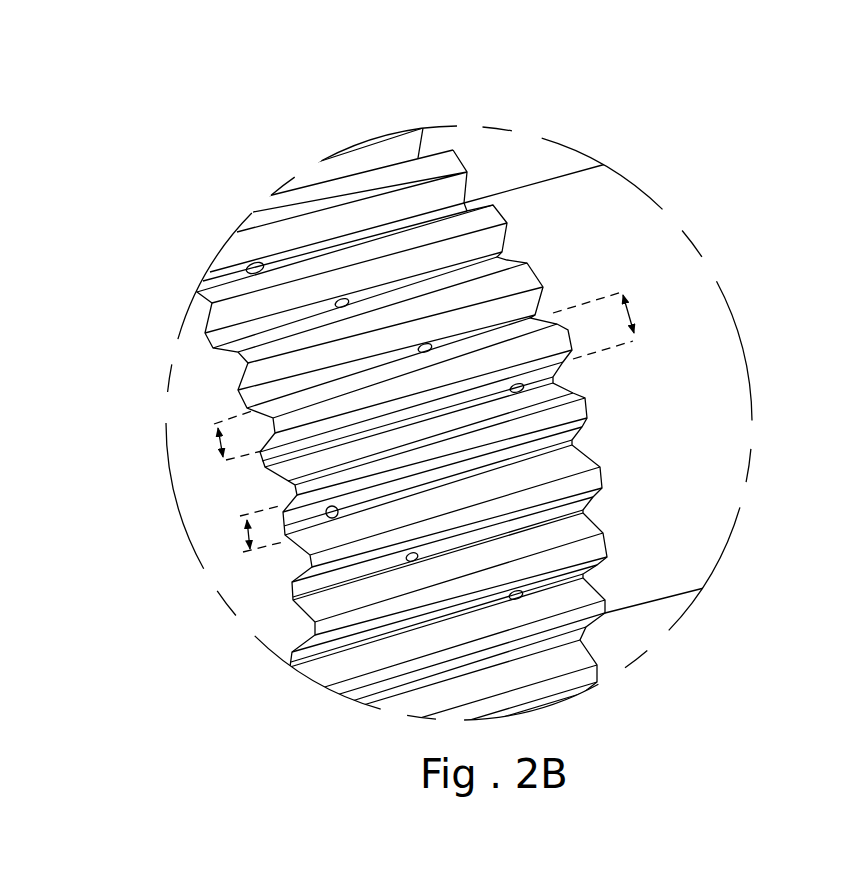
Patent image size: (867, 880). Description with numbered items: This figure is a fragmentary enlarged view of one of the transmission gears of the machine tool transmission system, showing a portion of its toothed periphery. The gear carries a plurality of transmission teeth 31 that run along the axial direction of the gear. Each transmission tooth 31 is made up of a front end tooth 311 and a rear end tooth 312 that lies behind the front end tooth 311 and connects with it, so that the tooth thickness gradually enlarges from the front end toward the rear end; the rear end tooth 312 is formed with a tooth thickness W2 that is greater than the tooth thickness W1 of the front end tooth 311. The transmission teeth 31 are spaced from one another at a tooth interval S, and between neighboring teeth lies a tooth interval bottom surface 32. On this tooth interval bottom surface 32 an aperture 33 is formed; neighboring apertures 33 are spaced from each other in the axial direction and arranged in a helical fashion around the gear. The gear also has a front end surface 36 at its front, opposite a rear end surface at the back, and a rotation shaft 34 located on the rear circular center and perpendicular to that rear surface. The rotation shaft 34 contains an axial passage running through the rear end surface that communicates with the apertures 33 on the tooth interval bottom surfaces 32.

The transmission tooth 31 is at (460, 70).
The front end tooth 311 is at (278, 282).
The rear end tooth 312 is at (483, 220).
The tooth interval bottom surface 32 is at (232, 335).
The aperture 33 is at (520, 597).
The rotation shaft 34 is at (713, 442).
The front end surface 36 is at (197, 400).
The tooth thickness of front end tooth W1 is at (217, 443).
The tooth thickness of rear end tooth W2 is at (630, 308).
The tooth interval S is at (248, 536).